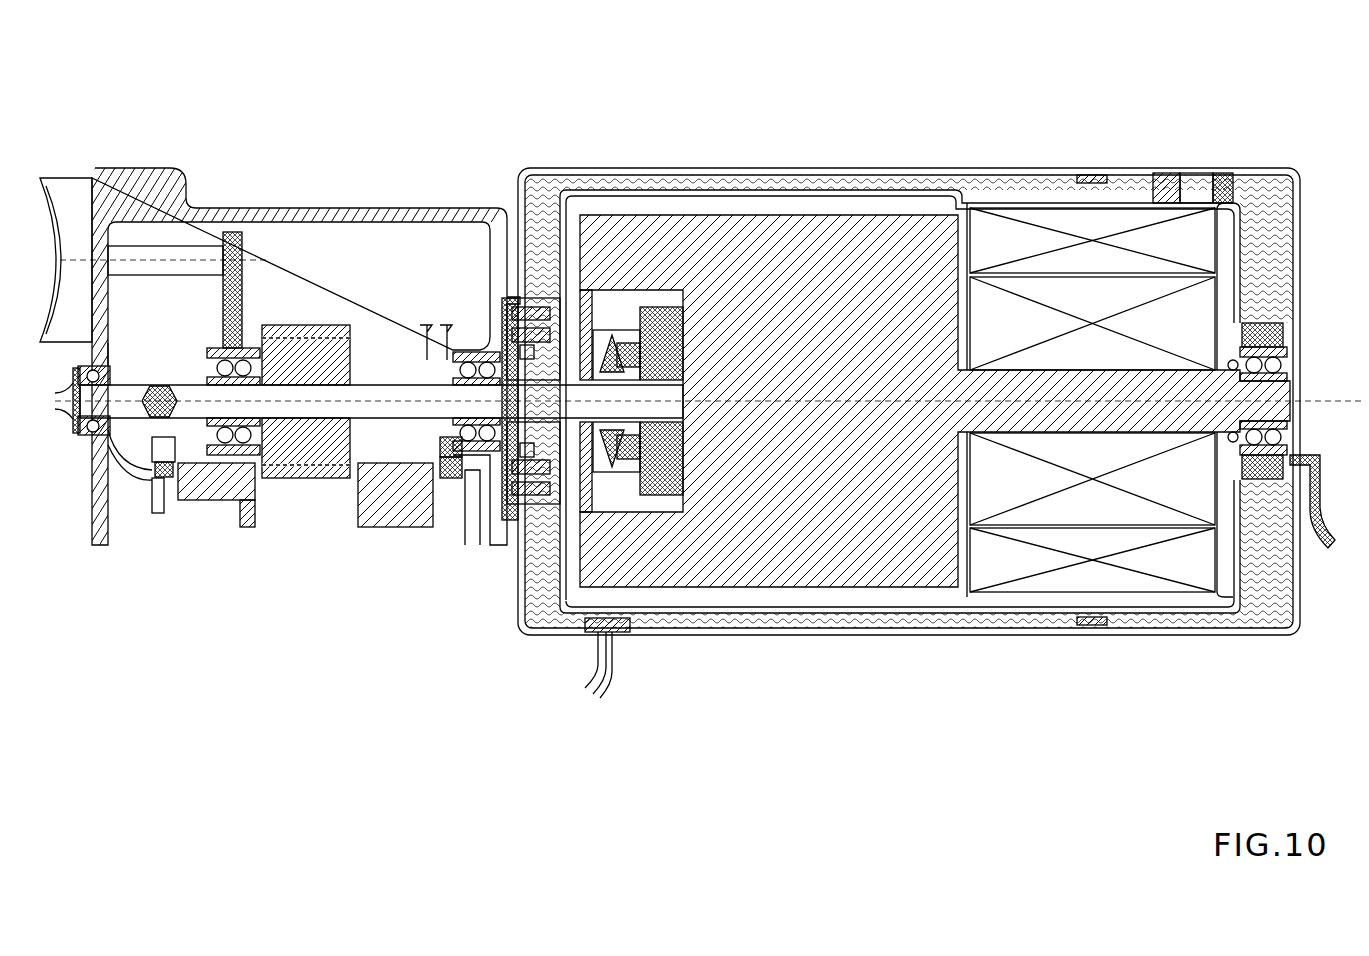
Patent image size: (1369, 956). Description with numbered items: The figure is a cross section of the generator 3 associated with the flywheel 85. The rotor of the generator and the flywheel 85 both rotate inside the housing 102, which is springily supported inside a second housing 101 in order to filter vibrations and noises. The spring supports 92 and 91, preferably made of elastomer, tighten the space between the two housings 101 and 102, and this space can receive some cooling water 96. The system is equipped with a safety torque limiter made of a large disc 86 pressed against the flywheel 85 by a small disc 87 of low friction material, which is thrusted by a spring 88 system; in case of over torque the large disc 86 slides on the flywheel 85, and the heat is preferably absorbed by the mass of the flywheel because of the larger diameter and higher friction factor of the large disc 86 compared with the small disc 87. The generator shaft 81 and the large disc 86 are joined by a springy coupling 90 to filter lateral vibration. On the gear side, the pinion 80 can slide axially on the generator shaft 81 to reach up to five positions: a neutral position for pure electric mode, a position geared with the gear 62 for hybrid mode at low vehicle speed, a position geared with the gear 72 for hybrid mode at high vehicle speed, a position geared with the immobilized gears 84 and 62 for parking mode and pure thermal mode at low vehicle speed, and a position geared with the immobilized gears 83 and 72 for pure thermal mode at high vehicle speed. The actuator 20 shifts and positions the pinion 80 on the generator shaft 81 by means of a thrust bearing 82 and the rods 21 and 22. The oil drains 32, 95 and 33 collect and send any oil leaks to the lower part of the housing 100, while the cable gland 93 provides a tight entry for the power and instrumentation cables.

The actuator 20 is at (85, 180).
The rod 21 is at (195, 244).
The rod 22 is at (238, 222).
The thrust bearing 82 is at (258, 335).
The pinion 80 is at (300, 330).
The housing 100 is at (370, 212).
The generator shaft 81 is at (385, 380).
The spring support 92 is at (530, 300).
The spring 88 is at (615, 330).
The small disc 87 is at (645, 330).
The large disc 86 is at (660, 355).
The springy coupling 90 is at (700, 325).
The flywheel 85 is at (815, 218).
The cable gland 93 is at (1220, 185).
The spring support 91 is at (1268, 335).
The gear 83 is at (167, 485).
The gear 72 is at (245, 528).
The gear 62 is at (402, 530).
The gear 84 is at (445, 482).
The oil drain 32 is at (590, 672).
The oil drain 95 is at (620, 628).
The second housing 101 is at (958, 637).
The housing 102 is at (995, 602).
The generator 3 is at (1137, 590).
The cooling water 96 is at (1258, 603).
The oil drain 33 is at (1322, 548).